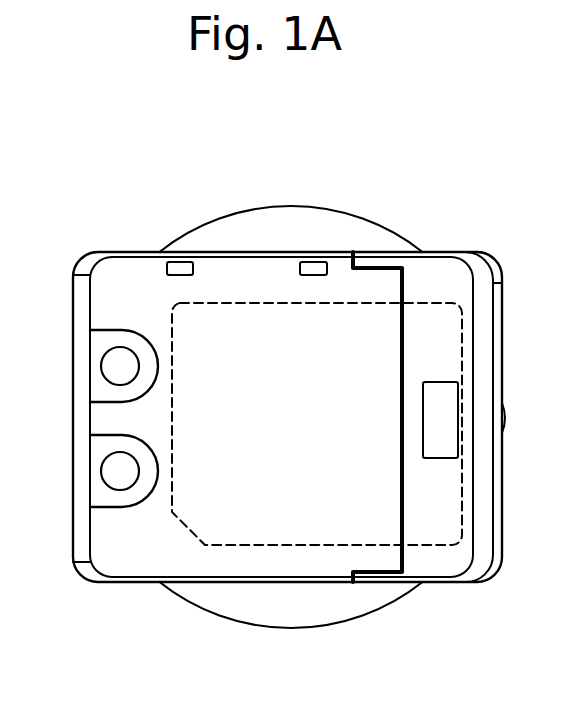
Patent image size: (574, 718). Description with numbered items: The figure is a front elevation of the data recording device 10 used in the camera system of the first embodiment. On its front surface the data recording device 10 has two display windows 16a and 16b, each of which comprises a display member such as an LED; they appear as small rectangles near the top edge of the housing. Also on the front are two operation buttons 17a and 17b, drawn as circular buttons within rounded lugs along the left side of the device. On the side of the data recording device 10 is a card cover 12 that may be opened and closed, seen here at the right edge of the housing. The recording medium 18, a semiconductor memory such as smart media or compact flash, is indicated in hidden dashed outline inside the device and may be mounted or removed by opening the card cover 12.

The data recording device 10 is at (460, 177).
The card cover 12 is at (486, 310).
The display window 16a is at (182, 261).
The display window 16b is at (313, 261).
The operation button 17a is at (118, 367).
The operation button 17b is at (118, 472).
The recording medium 18 is at (466, 362).